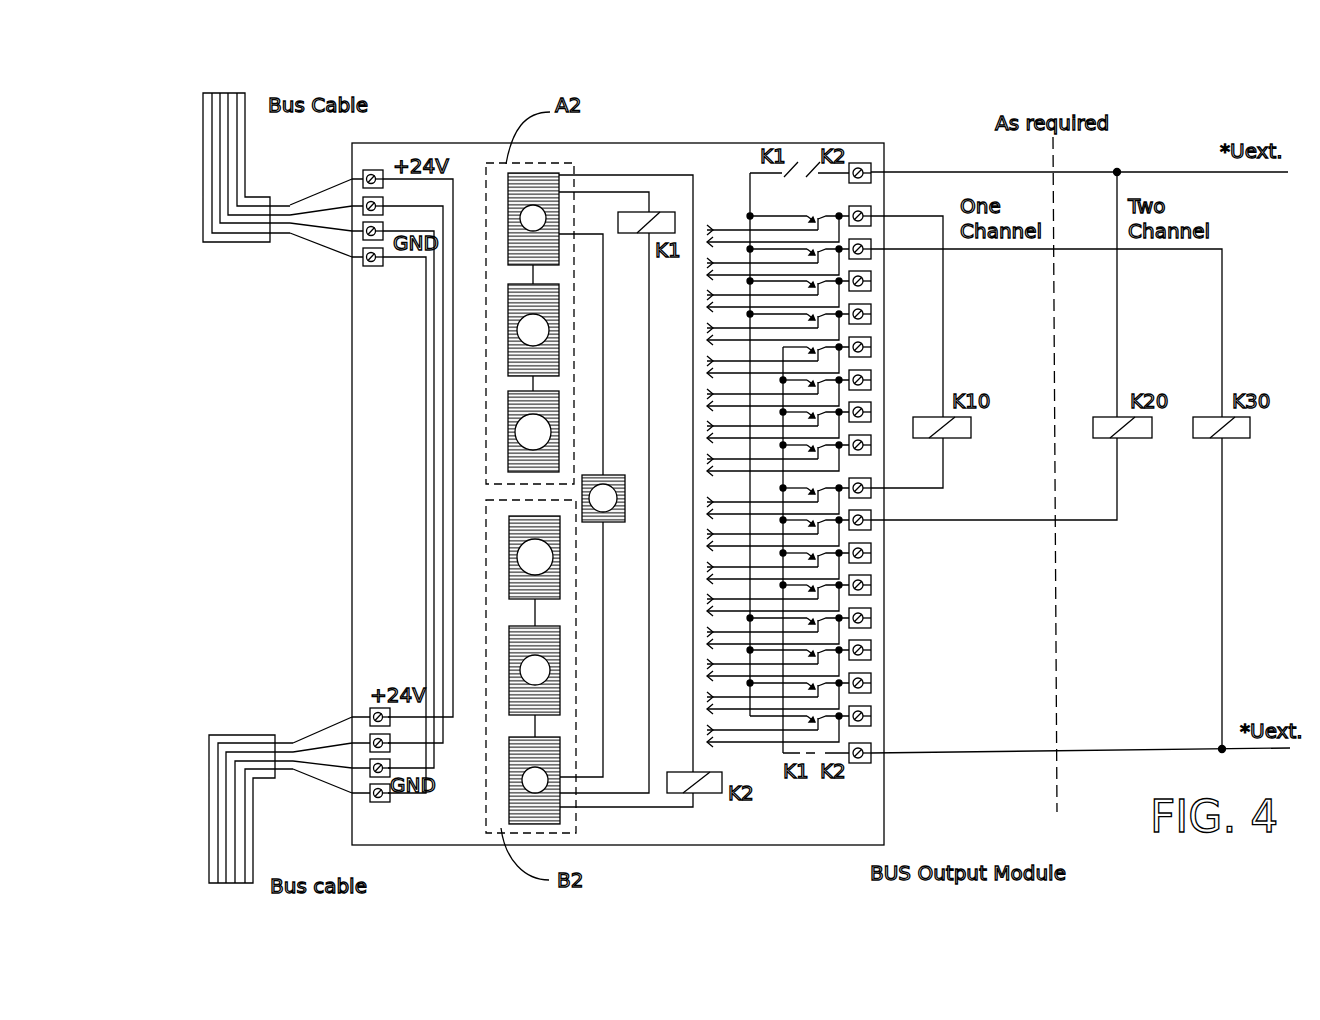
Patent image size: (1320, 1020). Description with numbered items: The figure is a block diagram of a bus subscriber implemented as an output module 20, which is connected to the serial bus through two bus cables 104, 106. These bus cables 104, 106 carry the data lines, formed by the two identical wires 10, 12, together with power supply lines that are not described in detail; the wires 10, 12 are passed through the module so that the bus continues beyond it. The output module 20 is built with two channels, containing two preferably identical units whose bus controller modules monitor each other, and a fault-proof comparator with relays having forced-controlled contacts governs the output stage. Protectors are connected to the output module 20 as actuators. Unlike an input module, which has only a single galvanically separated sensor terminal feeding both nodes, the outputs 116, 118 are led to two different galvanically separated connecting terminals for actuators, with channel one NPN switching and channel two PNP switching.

The wire 10 is at (323, 208).
The wire 12 is at (320, 232).
The output module 20 is at (352, 547).
The bus cable 104 is at (237, 242).
The bus cable 106 is at (243, 735).
The output 116 is at (873, 213).
The output 118 is at (872, 486).